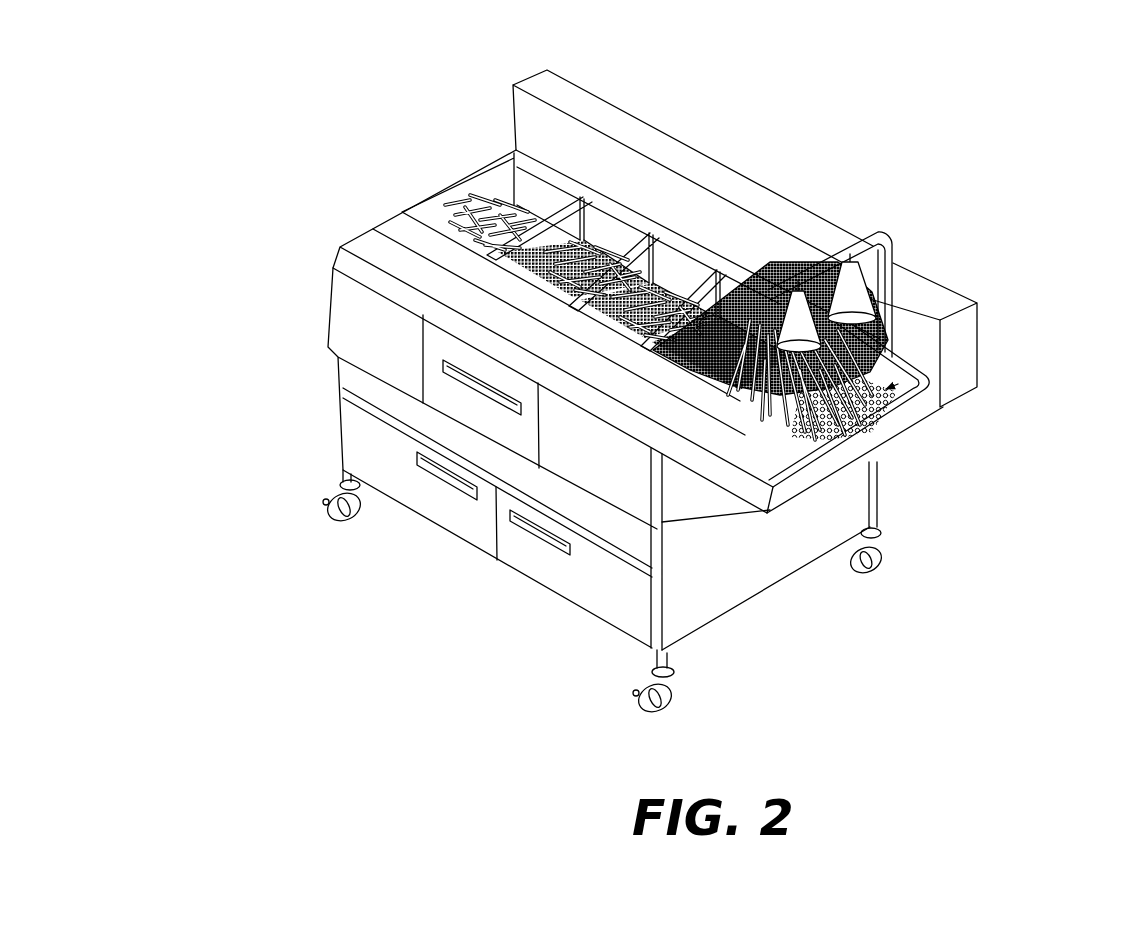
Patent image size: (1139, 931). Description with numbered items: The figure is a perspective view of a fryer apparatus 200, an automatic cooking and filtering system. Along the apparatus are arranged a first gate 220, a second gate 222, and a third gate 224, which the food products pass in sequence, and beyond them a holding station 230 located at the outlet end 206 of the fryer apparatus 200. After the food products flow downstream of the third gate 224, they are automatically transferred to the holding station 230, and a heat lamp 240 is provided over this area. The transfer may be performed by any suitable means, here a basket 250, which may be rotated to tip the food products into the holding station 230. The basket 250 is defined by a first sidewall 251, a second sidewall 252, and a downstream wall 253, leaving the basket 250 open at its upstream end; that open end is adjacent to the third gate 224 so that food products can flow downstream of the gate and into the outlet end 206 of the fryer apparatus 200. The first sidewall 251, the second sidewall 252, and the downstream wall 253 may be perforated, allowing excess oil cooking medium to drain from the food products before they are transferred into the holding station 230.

The fryer apparatus 200 is at (334, 125).
The outlet end 206 is at (944, 240).
The first gate 220 is at (584, 186).
The second gate 222 is at (652, 222).
The third gate 224 is at (720, 262).
The holding station 230 is at (945, 404).
The heat lamp 240 is at (891, 238).
The basket 250 is at (790, 412).
The first sidewall 251 is at (688, 368).
The second sidewall 252 is at (886, 292).
The downstream wall 253 is at (855, 420).